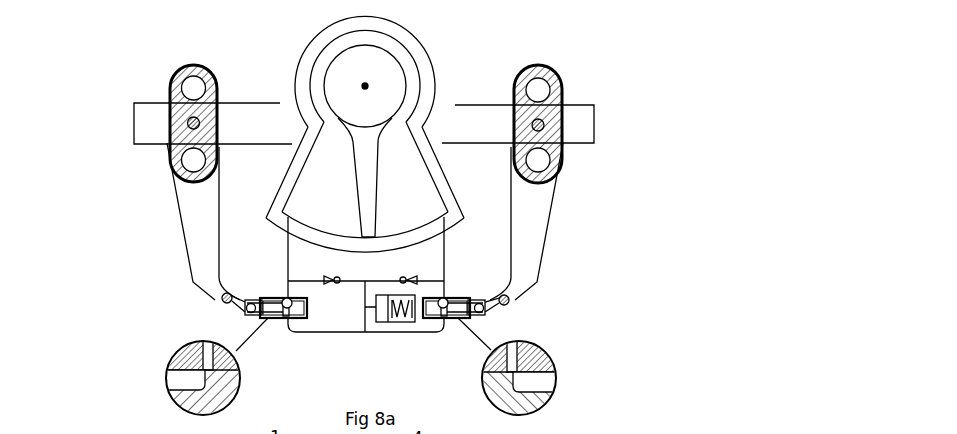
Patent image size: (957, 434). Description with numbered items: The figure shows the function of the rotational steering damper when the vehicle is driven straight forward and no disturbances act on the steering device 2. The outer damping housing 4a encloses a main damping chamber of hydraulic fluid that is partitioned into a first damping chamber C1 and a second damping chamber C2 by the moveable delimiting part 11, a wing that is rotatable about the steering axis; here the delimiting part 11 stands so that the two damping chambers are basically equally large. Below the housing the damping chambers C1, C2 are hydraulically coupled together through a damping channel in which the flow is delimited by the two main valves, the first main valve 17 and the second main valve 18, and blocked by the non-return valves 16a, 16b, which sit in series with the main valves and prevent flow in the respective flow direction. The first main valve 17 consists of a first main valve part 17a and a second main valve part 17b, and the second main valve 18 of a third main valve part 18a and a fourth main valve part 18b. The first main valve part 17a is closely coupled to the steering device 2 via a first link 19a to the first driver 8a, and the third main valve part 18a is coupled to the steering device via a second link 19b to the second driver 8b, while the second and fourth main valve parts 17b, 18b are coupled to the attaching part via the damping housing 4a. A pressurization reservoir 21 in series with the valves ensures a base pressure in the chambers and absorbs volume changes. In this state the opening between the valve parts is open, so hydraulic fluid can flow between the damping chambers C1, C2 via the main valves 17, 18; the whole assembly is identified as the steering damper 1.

The articulated support device 1 is at (303, 53).
The outer damping housing 4a is at (400, 33).
The delimiting part 11 is at (368, 178).
The first damping chamber C1 is at (311, 180).
The second damping chamber C2 is at (427, 190).
The steering device 2 is at (143, 127).
The first driver 8a is at (195, 220).
The second driver 8b is at (540, 223).
The first link 19a is at (207, 298).
The second link 19b is at (508, 300).
The first main valve 17 is at (243, 306).
The second main valve 18 is at (492, 306).
The first main valve part 17a is at (247, 315).
The third main valve part 18a is at (490, 313).
The second main valve part 17b is at (278, 318).
The fourth main valve part 18b is at (453, 320).
The non-return valve 16a is at (330, 283).
The non-return valve 16b is at (410, 283).
The pressurization reservoir 21 is at (388, 322).